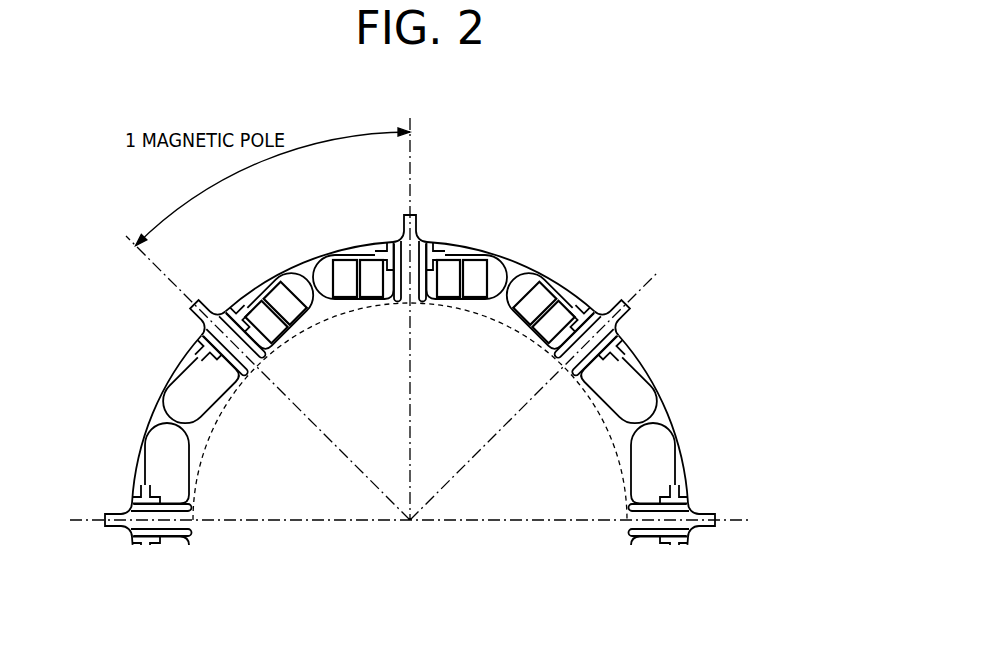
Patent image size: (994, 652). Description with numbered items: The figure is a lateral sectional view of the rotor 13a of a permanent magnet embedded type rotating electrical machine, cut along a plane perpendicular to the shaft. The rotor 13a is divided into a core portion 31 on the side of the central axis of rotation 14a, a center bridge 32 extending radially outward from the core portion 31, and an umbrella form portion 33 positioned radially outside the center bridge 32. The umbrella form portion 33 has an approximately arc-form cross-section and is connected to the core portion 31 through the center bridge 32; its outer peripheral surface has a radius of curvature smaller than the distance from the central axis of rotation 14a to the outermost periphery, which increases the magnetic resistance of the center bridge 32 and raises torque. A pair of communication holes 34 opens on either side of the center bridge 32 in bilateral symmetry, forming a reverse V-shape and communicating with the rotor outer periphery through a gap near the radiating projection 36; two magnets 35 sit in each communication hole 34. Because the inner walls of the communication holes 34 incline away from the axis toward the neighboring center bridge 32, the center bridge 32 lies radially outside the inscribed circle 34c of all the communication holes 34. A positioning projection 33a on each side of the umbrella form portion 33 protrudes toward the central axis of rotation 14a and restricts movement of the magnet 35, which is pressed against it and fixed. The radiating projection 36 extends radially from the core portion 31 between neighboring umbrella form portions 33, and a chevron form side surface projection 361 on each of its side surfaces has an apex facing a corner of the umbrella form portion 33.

The rotor 13a is at (675, 212).
The central axis of rotation 14a is at (410, 520).
The core portion 31 is at (393, 452).
The center bridge 32 is at (310, 292).
The umbrella form portion 33 is at (320, 246).
The positioning projection 33a is at (389, 304).
The communication hole 34 is at (325, 262).
The inscribed circle 34c is at (323, 318).
The magnet 35 is at (378, 262).
The radiating projection 36 is at (416, 214).
The chevron form side surface projection 361 is at (395, 243).